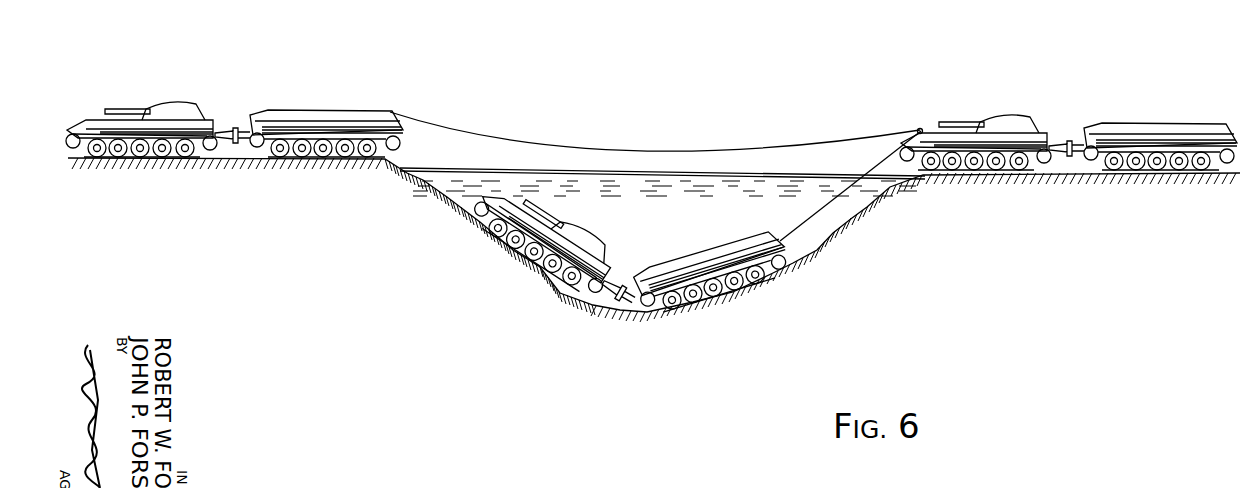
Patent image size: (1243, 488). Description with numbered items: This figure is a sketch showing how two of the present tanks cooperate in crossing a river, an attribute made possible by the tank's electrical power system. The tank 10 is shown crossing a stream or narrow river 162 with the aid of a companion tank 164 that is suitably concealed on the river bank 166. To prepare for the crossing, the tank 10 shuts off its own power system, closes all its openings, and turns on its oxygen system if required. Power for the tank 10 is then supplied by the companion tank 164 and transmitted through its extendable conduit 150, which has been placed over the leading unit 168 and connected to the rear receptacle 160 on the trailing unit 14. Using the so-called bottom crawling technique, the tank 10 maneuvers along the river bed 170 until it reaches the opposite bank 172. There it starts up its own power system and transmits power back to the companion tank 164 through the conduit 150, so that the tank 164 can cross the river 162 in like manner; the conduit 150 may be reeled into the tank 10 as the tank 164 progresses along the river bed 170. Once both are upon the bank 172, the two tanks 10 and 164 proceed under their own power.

The tank 10 is at (292, 83).
The trailing unit 14 is at (707, 267).
The extendable conduit 150 is at (1063, 135).
The rear receptacle 160 is at (777, 243).
The stream or narrow river 162 is at (600, 216).
The companion tank 164 is at (1144, 98).
The river bank 166 is at (1053, 216).
The leading unit 168 is at (1010, 117).
The river bed 170 is at (826, 237).
The opposite bank 172 is at (250, 204).